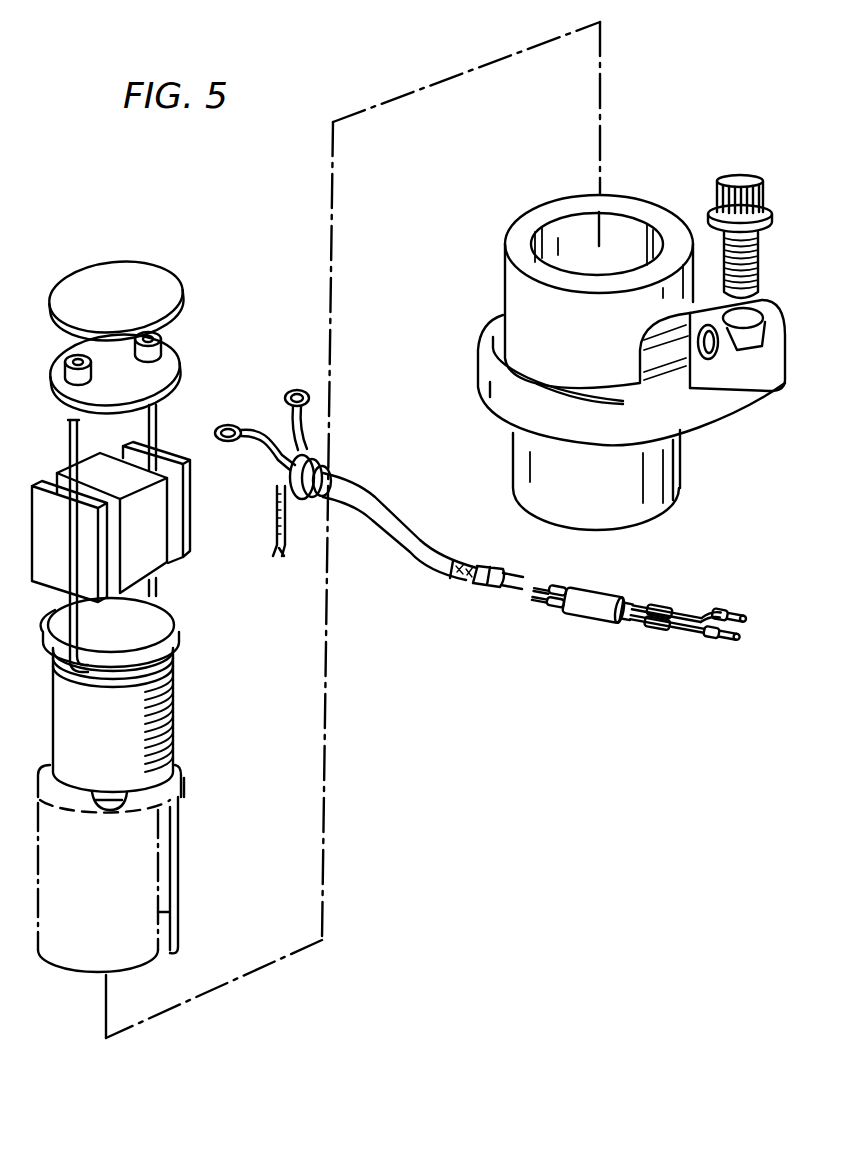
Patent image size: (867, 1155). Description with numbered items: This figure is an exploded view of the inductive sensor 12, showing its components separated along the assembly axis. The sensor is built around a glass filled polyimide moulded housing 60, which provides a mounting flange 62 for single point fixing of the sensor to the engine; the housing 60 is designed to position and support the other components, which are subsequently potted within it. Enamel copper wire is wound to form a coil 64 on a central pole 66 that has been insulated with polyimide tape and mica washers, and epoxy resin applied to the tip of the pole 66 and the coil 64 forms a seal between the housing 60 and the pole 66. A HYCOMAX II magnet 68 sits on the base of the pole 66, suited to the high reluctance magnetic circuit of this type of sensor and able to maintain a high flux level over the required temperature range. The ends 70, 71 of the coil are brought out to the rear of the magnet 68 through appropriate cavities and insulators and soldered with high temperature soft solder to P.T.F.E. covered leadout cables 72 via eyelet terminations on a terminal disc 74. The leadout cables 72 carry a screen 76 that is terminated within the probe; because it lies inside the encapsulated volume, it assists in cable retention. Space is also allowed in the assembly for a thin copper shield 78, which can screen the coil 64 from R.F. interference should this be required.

The sensor 12 is at (380, 105).
The housing 60 is at (503, 286).
The mounting flange 62 is at (737, 398).
The coil 64 is at (173, 697).
The central pole 66 is at (180, 806).
The magnet 68 is at (155, 560).
The coil end 70 is at (73, 432).
The coil end 71 is at (158, 433).
The leadout cables 72 is at (407, 527).
The terminal disc 74 is at (171, 371).
The screen 76 is at (272, 518).
The copper shield 78 is at (80, 944).